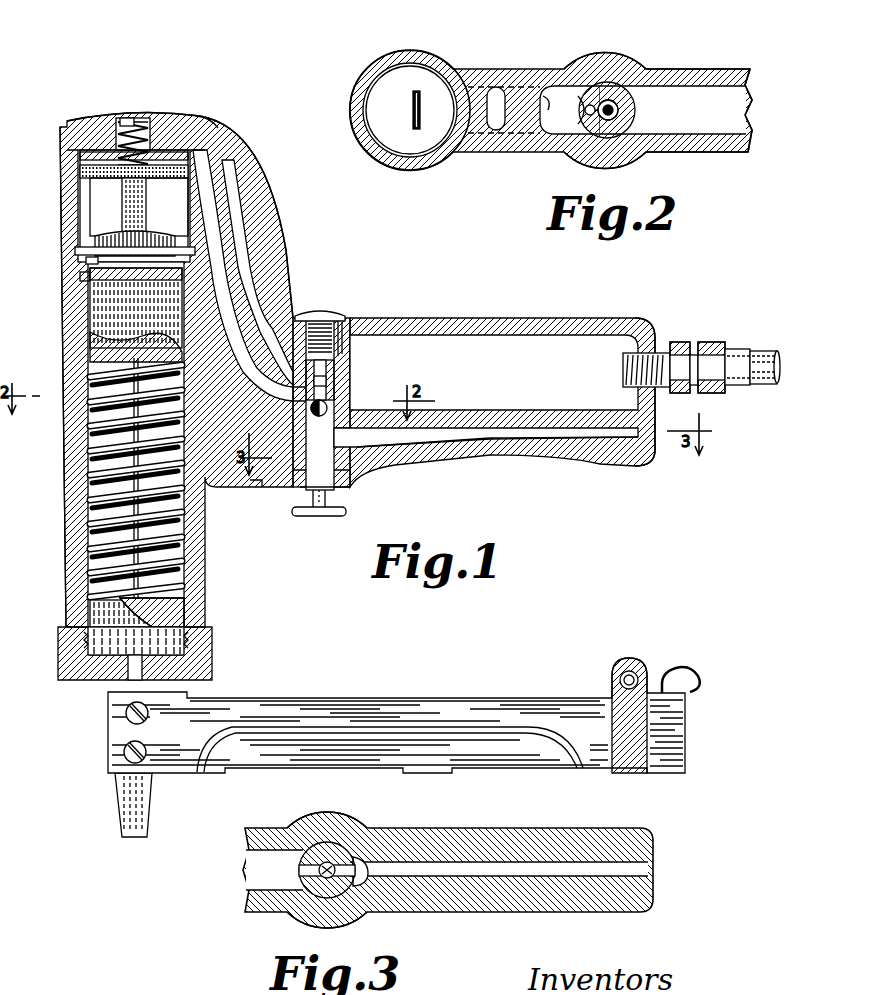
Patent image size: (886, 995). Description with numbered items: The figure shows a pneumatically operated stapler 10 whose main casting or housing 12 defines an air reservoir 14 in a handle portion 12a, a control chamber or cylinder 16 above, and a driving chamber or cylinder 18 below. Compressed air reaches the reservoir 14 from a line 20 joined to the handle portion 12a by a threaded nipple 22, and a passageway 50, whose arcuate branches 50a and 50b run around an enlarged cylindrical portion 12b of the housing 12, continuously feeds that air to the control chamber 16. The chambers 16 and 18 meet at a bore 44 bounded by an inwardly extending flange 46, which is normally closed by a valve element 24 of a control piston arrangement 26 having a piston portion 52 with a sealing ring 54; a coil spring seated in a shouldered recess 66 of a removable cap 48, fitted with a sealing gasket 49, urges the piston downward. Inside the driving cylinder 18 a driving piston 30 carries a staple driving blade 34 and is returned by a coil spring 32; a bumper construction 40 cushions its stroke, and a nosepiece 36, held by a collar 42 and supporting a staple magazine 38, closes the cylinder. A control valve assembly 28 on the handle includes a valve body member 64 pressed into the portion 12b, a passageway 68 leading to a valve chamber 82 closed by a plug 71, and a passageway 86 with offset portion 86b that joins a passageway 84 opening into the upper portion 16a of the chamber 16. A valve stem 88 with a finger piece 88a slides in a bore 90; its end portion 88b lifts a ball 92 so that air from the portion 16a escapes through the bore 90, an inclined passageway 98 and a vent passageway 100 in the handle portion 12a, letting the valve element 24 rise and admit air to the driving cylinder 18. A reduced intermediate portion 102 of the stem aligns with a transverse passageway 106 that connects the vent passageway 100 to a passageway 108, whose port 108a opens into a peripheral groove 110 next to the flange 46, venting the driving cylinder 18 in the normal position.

In FIG. 1, the stapler 10 is at (314, 251).
In FIG. 1, the main casting or housing 12 is at (207, 479).
In FIG. 2, the main casting or housing 12 is at (412, 178).
In FIG. 1, the handle portion 12a is at (566, 318).
In FIG. 2, the handle portion 12a is at (710, 150).
In FIG. 3, the handle portion 12a is at (474, 828).
In FIG. 2, the enlarged cylindrical portion 12b is at (592, 62).
In FIG. 3, the enlarged cylindrical portion 12b is at (306, 912).
In FIG. 1, the air reservoir 14 is at (452, 336).
In FIG. 2, the air reservoir 14 is at (708, 90).
In FIG. 1, the control chamber or cylinder 16 is at (82, 206).
In FIG. 1, the upper portion of control chamber 16a is at (85, 157).
In FIG. 1, the driving chamber or cylinder 18 is at (95, 459).
In FIG. 2, the driving chamber or cylinder 18 is at (375, 136).
In FIG. 1, the air line 20 is at (760, 350).
In FIG. 1, the threaded nipple 22 is at (680, 342).
In FIG. 1, the valve element 24 is at (150, 240).
In FIG. 1, the control piston arrangement 26 is at (156, 212).
In FIG. 1, the control valve assembly 28 is at (330, 312).
In FIG. 1, the driving piston 30 is at (100, 300).
In FIG. 1, the coil spring 32 is at (96, 537).
In FIG. 2, the coil spring 32 is at (410, 50).
In FIG. 1, the staple driving blade 34 is at (160, 585).
In FIG. 2, the staple driving blade 34 is at (420, 92).
In FIG. 1, the nosepiece 36 is at (120, 797).
In FIG. 1, the staple magazine 38 is at (304, 688).
In FIG. 1, the bumper construction 40 is at (176, 612).
In FIG. 2, the bumper construction 40 is at (383, 156).
In FIG. 1, the collar 42 is at (206, 652).
In FIG. 1, the opening or bore 44 is at (86, 263).
In FIG. 1, the flange or lip 46 is at (80, 252).
In FIG. 1, the removable cap 48 is at (102, 120).
In FIG. 1, the sealing gasket 49 is at (206, 130).
In FIG. 1, the passageway 50 is at (228, 272).
In FIG. 2, the passageway 50 is at (548, 92).
In FIG. 2, the arcuate branch 50a is at (635, 78).
In FIG. 2, the arcuate branch 50b is at (598, 165).
In FIG. 1, the cylinder piston portion 52 is at (92, 178).
In FIG. 1, the sealing gasket or ring 54 is at (80, 172).
In FIG. 1, the valve body member 64 is at (127, 122).
In FIG. 2, the valve body member 64 is at (612, 100).
In FIG. 3, the valve body member 64 is at (327, 842).
In FIG. 1, the cylindrical opening 66 is at (143, 124).
In FIG. 1, the passageway 68 is at (346, 342).
In FIG. 1, the plug 71 is at (313, 312).
In FIG. 2, the valve chamber 82 is at (615, 90).
In FIG. 1, the passageway 84 is at (226, 162).
In FIG. 1, the passageway 86 is at (300, 376).
In FIG. 2, the passageway 86 is at (598, 100).
In FIG. 2, the offset portion 86b is at (590, 116).
In FIG. 1, the valve operating stem 88 is at (348, 513).
In FIG. 1, the finger piece 88a is at (300, 517).
In FIG. 1, the reduced diameter end portion 88b is at (318, 430).
In FIG. 1, the bore 90 is at (336, 417).
In FIG. 1, the ball or spherical member 92 is at (326, 410).
In FIG. 2, the ball or spherical member 92 is at (614, 120).
In FIG. 1, the inclined passageway 98 is at (342, 432).
In FIG. 1, the vent passageway 100 is at (548, 444).
In FIG. 3, the vent passageway 100 is at (648, 866).
In FIG. 1, the intermediate portion 102 is at (310, 470).
In FIG. 3, the intermediate portion 102 is at (350, 912).
In FIG. 1, the transverse passageway 106 is at (338, 470).
In FIG. 3, the transverse passageway 106 is at (362, 838).
In FIG. 1, the passageway 108 is at (262, 480).
In FIG. 2, the passageway 108 is at (496, 128).
In FIG. 3, the passageway 108 is at (238, 850).
In FIG. 1, the port 108a is at (200, 266).
In FIG. 1, the peripherally extending groove 110 is at (82, 281).